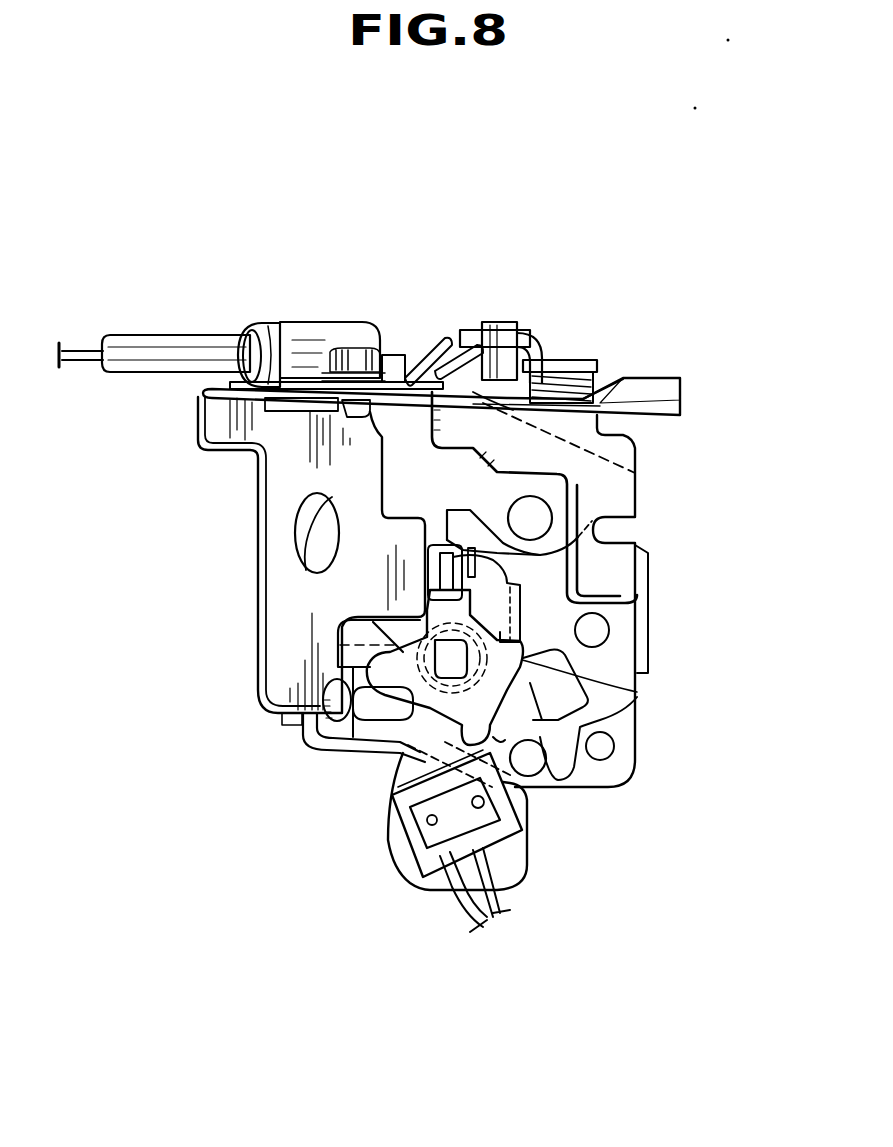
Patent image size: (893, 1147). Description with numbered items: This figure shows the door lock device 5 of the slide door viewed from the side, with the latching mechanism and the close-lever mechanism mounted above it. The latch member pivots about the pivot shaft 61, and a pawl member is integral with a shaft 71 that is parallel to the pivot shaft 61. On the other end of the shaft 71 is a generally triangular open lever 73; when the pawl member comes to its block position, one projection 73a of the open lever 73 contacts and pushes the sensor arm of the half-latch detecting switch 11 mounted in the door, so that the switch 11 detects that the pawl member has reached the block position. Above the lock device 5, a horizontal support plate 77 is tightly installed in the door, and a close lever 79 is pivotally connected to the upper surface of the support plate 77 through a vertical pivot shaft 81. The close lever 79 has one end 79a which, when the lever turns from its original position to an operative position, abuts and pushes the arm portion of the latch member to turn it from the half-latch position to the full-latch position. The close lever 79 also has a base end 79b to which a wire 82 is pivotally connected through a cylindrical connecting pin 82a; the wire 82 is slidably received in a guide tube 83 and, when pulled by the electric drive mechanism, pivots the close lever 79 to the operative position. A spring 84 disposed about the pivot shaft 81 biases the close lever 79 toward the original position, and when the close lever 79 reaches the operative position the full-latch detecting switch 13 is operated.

The door lock device 5 is at (645, 758).
The half-latch detecting switch 11 is at (403, 857).
The full-latch detecting switch 13 is at (393, 352).
The pivot shaft 61 is at (552, 516).
The shaft 71 is at (637, 692).
The open lever 73 is at (460, 660).
The projection 73a is at (513, 742).
The support plate 77 is at (260, 527).
The close lever 79 is at (478, 363).
The end of close lever 79a is at (660, 383).
The base end of close lever 79b is at (528, 327).
The vertical pivot shaft 81 is at (570, 360).
The wire 82 is at (83, 350).
The cylindrical connecting pin 82a is at (493, 340).
The guide tube 83 is at (187, 347).
The spring 84 is at (593, 395).